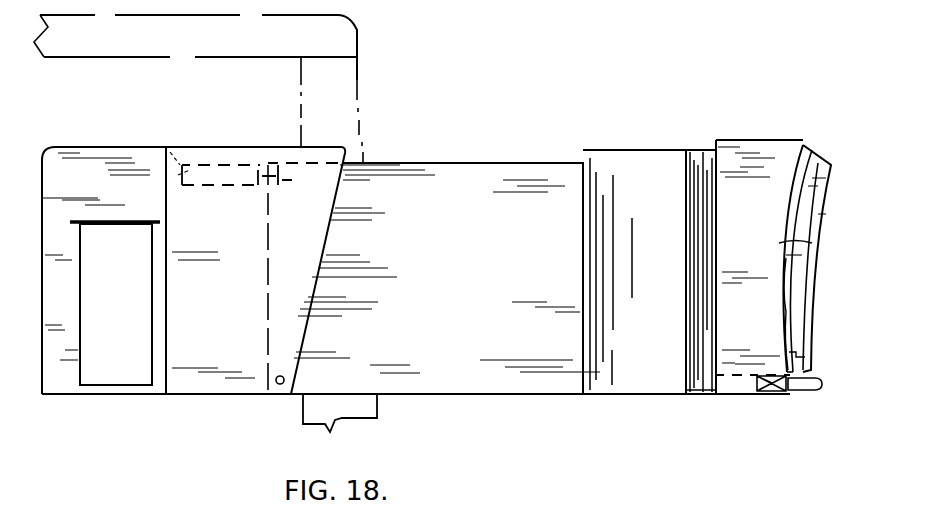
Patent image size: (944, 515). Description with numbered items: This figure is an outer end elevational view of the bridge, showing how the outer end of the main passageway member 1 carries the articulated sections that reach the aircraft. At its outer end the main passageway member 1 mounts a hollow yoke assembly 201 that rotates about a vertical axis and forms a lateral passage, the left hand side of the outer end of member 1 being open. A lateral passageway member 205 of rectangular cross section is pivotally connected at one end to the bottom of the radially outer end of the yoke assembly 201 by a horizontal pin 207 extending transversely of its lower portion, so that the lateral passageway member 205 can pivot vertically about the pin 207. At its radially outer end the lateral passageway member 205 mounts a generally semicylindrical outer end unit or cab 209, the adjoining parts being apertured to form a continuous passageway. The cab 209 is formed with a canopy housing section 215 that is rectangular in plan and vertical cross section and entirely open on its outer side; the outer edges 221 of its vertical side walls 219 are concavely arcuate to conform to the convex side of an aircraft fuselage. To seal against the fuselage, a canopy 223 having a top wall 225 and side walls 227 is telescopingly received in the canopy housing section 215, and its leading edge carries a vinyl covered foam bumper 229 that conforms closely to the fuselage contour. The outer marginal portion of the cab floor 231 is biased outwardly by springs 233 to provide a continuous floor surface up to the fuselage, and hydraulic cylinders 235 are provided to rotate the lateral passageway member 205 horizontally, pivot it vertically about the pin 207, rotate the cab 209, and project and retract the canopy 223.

The main passageway member 1 is at (44, 147).
The yoke assembly 201 is at (236, 303).
The lateral passageway member 205 is at (492, 289).
The horizontal pin 207 is at (277, 385).
The outer end unit (cab) 209 is at (652, 395).
The canopy housing section 215 is at (762, 150).
The vertical side walls 219 is at (758, 210).
The outer edges 221 is at (808, 242).
The canopy 223 is at (828, 199).
The top wall 225 is at (815, 160).
The side walls 227 is at (799, 273).
The vinyl covered foam bumper 229 is at (810, 312).
The outer marginal portion of the cab floor 231 is at (815, 391).
The springs 233 is at (772, 394).
The hydraulic cylinders 235 is at (222, 196).